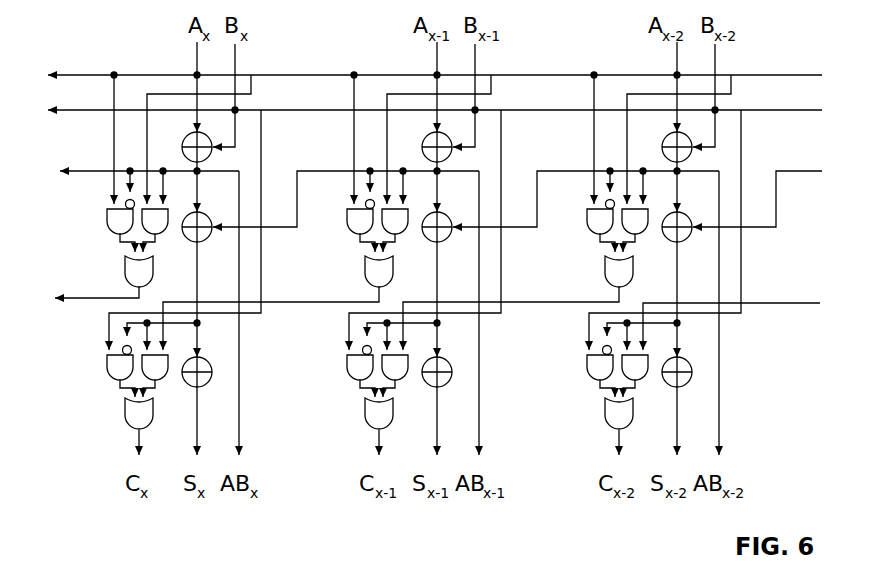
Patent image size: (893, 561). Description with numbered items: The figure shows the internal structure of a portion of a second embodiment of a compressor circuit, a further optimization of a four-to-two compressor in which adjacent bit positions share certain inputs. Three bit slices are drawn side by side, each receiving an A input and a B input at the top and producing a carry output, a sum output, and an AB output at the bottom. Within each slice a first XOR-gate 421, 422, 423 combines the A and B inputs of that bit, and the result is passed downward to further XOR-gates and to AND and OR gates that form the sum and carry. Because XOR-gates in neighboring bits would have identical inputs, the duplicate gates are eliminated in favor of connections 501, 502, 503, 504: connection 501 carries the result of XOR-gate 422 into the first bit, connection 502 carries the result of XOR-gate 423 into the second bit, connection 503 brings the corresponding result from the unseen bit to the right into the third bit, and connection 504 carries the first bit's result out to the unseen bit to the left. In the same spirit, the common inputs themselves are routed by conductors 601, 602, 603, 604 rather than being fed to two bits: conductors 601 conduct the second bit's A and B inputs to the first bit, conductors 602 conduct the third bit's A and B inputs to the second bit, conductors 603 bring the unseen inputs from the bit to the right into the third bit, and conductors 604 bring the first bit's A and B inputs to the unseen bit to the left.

The XOR-gate 421 is at (190, 133).
The XOR-gate 422 is at (432, 137).
The XOR-gate 423 is at (672, 132).
The connection 501 is at (347, 172).
The connection 502 is at (587, 172).
The connection 503 is at (812, 172).
The connection 504 is at (110, 169).
The conductors 601 is at (323, 110).
The conductors 602 is at (577, 110).
The conductors 603 is at (812, 102).
The conductors 604 is at (102, 110).